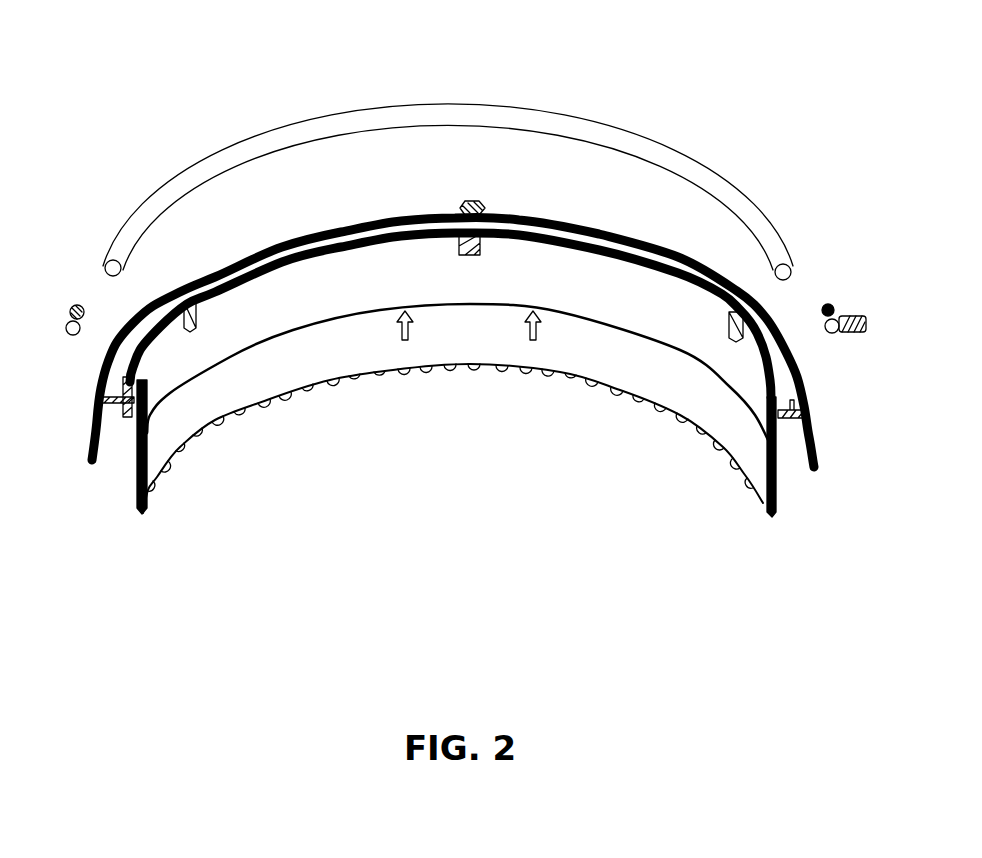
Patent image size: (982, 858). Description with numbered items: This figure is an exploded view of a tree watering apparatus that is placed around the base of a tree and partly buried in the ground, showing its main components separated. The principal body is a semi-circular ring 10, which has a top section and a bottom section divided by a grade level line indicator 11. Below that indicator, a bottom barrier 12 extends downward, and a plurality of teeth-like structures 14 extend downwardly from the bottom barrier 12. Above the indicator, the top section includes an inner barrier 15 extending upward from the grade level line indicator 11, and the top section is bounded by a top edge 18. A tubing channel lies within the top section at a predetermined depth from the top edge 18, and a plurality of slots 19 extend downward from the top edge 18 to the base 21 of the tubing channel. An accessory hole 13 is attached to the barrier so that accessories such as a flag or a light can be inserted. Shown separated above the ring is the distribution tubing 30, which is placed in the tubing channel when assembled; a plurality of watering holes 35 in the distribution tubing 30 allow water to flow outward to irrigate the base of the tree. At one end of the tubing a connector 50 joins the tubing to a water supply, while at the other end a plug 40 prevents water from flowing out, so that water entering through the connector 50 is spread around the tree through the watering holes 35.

The semi-circular ring 10 is at (100, 400).
The grade level line indicator 11 is at (229, 358).
The bottom barrier 12 is at (170, 437).
The accessory hole 13 is at (467, 200).
The teeth-like structures 14 is at (482, 370).
The inner barrier 15 is at (752, 373).
The top edge 18 is at (250, 240).
The slots 19 is at (477, 257).
The base of the tubing channel 21 is at (792, 407).
The distribution tubing 30 is at (665, 145).
The watering holes 35 is at (465, 118).
The plug 40 is at (72, 308).
The connector 50 is at (843, 313).